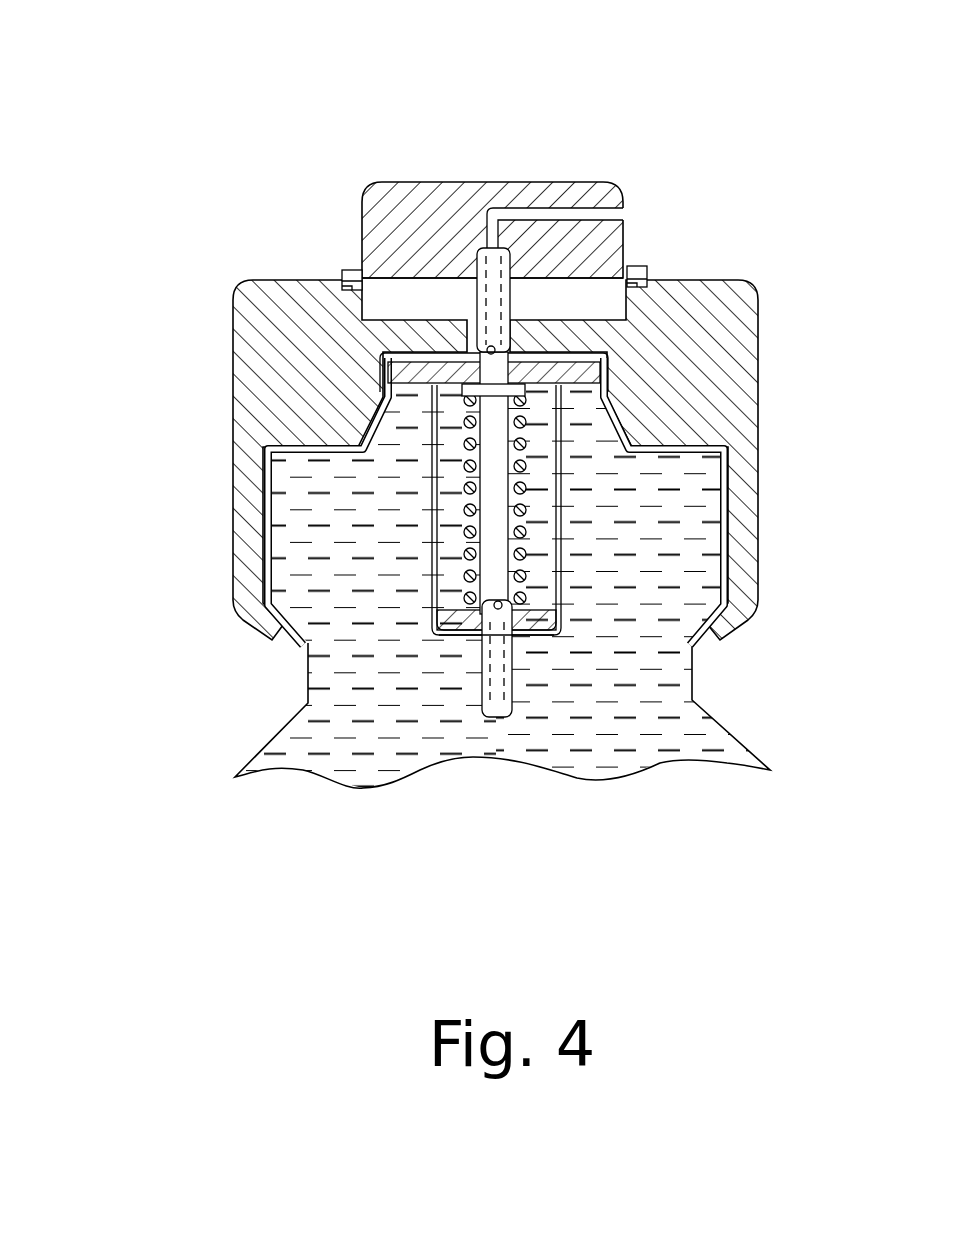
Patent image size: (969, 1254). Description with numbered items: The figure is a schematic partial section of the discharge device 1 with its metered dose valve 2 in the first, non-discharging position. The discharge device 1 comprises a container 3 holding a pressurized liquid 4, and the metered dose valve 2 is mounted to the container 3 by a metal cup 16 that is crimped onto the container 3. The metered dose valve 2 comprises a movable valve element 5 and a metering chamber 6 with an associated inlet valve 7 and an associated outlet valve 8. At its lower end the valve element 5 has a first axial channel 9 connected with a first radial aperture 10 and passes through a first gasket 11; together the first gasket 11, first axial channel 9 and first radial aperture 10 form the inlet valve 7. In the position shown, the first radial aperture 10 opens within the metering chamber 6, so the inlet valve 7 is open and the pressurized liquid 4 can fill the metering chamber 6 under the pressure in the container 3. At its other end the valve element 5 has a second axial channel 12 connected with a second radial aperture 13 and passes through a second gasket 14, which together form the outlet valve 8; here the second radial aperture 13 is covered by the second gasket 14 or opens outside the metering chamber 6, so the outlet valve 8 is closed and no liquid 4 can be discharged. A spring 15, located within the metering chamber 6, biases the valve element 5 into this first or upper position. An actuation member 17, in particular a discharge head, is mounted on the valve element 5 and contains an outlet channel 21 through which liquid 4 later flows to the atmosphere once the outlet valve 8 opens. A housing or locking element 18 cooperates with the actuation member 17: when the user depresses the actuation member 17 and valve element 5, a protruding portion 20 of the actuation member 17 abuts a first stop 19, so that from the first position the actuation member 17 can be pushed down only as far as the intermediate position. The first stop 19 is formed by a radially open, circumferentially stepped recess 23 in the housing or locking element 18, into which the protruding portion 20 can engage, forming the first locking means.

The discharge device 1 is at (186, 182).
The metered dose valve 2 is at (573, 468).
The container 3 is at (283, 730).
The pressurized liquid 4 is at (637, 745).
The valve element 5 is at (508, 540).
The metering chamber 6 is at (550, 575).
The inlet valve 7 is at (560, 636).
The outlet valve 8 is at (508, 335).
The first axial channel 9 is at (478, 708).
The first radial aperture 10 is at (465, 642).
The first gasket 11 is at (440, 636).
The second axial channel 12 is at (430, 182).
The second radial aperture 13 is at (488, 348).
The second gasket 14 is at (383, 360).
The spring 15 is at (478, 530).
The metal cup 16 is at (713, 440).
The actuation member 17 is at (463, 205).
The housing or locking element 18 is at (270, 340).
The first stop 19 is at (347, 279).
The protruding portion 20 is at (347, 275).
The outlet channel 21 is at (550, 215).
The recess 23 is at (347, 277).